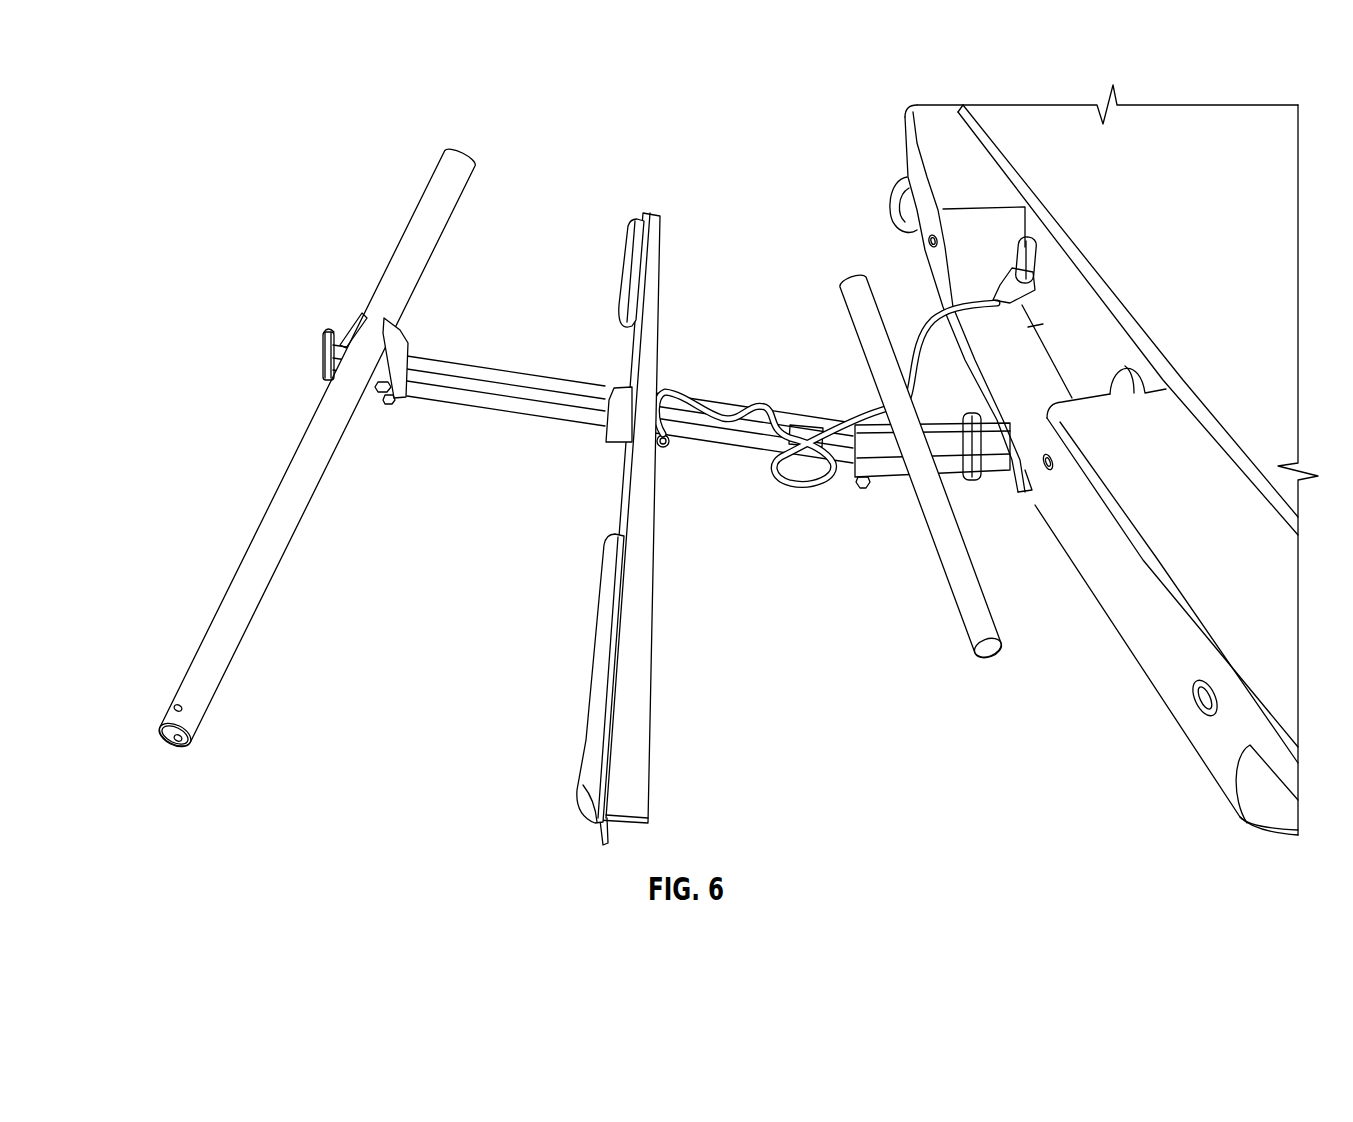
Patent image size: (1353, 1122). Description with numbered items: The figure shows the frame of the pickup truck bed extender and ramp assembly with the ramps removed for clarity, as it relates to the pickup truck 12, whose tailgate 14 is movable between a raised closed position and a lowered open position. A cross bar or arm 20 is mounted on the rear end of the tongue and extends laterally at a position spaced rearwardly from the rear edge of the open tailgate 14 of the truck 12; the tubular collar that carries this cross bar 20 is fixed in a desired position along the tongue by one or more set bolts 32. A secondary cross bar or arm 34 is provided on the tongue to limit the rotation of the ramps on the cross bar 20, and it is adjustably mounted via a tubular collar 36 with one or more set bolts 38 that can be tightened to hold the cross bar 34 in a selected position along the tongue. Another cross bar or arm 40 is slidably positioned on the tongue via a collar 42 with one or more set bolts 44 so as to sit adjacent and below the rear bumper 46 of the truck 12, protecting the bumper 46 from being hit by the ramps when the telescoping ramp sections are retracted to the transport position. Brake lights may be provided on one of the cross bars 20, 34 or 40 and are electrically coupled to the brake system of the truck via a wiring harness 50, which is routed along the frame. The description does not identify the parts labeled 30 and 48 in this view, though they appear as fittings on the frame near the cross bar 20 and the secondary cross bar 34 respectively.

The pickup truck 12 is at (966, 96).
The tailgate 14 is at (1022, 120).
The cross bar 20 is at (282, 535).
The end clamp bracket 30 is at (423, 380).
The set bolts 32 is at (380, 392).
The secondary cross bar 34 is at (651, 338).
The tubular collar 36 is at (613, 445).
The set bolts 38 is at (661, 452).
The cross bar 40 is at (950, 573).
The collar 42 is at (892, 468).
The set bolts 44 is at (862, 487).
The rear bumper 46 is at (935, 152).
The flange strips 48 is at (621, 279).
The wiring harness 50 is at (718, 411).